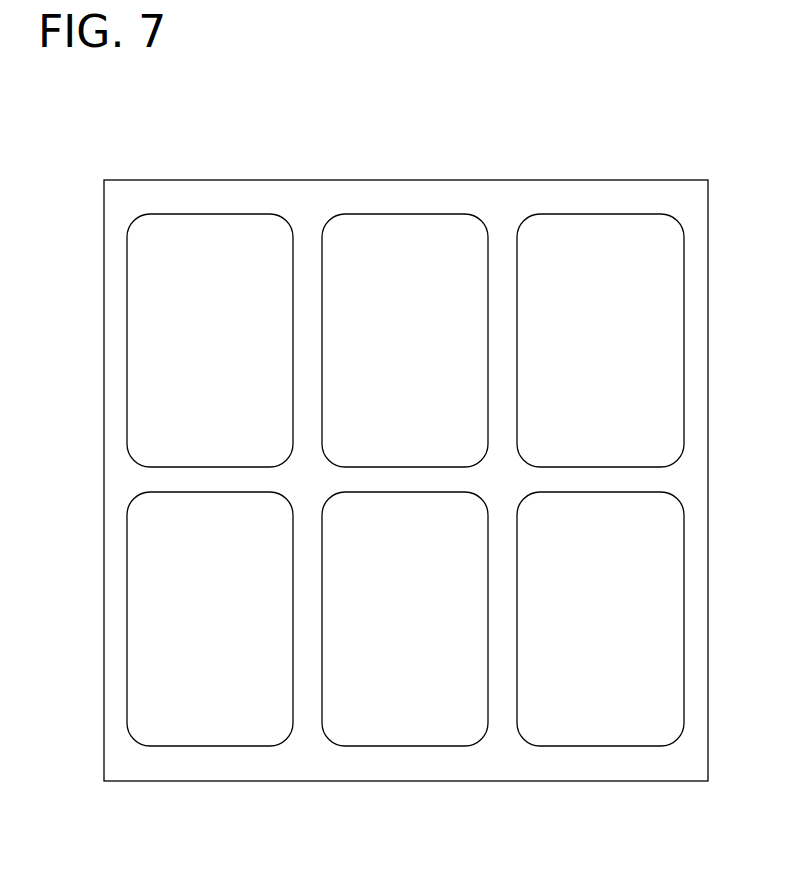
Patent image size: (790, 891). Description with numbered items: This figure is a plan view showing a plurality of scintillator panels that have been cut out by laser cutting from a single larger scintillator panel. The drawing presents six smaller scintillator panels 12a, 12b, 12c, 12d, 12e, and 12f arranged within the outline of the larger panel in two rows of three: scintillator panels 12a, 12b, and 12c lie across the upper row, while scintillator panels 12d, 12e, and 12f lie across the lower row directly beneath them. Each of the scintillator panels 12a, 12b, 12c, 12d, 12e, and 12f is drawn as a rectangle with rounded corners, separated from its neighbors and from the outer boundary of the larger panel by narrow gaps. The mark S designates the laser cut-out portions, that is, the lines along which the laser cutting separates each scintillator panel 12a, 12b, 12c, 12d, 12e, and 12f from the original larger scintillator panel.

The laser cut-out portion S is at (168, 210).
The scintillator panel 12a is at (232, 235).
The scintillator panel 12b is at (424, 235).
The scintillator panel 12c is at (622, 235).
The scintillator panel 12d is at (227, 717).
The scintillator panel 12e is at (423, 720).
The scintillator panel 12f is at (617, 717).